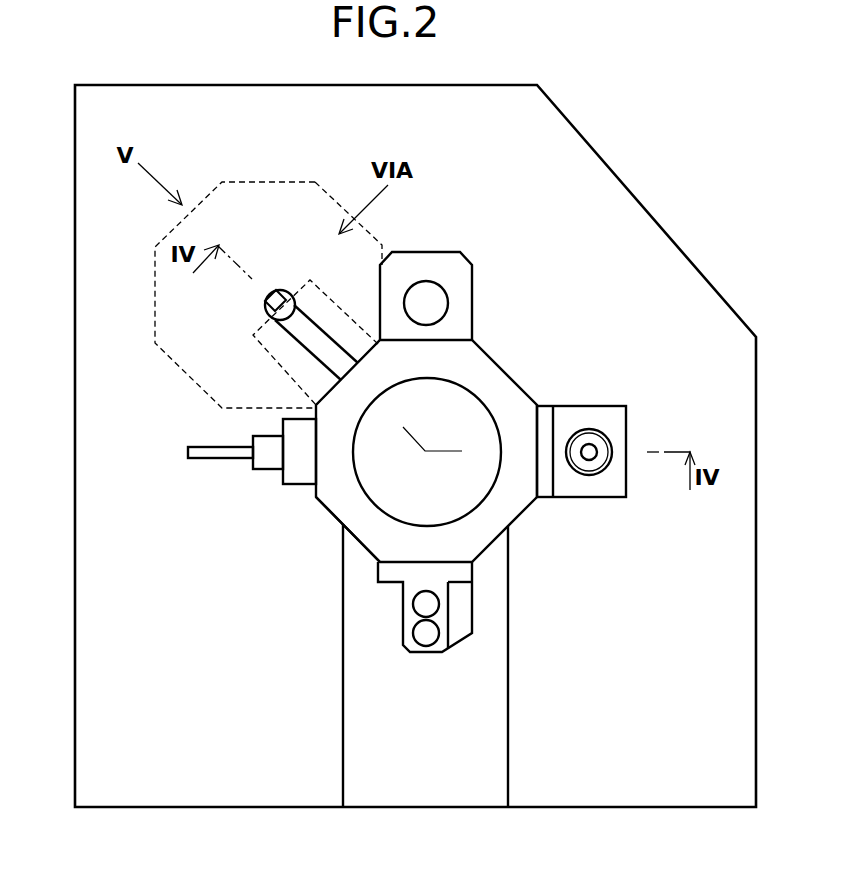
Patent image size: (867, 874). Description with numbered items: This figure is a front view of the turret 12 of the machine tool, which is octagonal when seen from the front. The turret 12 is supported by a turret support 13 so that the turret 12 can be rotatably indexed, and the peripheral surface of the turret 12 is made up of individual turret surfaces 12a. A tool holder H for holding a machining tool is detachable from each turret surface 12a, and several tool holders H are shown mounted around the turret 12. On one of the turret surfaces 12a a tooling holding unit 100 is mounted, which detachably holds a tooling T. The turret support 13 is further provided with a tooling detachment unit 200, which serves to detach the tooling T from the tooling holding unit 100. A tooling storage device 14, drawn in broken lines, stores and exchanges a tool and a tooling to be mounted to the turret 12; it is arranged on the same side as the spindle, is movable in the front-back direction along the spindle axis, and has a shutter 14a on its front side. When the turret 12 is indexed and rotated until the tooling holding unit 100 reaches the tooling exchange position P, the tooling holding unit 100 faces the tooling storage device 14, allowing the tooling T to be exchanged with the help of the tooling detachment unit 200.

The turret 12 is at (516, 362).
The turret surface 12a is at (333, 518).
The turret support 13 is at (516, 700).
The tooling storage device 14 is at (231, 180).
The shutter 14a is at (262, 348).
The tooling holding unit 100 is at (607, 406).
The tooling detachment unit 200 is at (290, 277).
The tool holder H is at (464, 276).
The tooling exchange position P is at (248, 332).
The tooling T is at (593, 475).